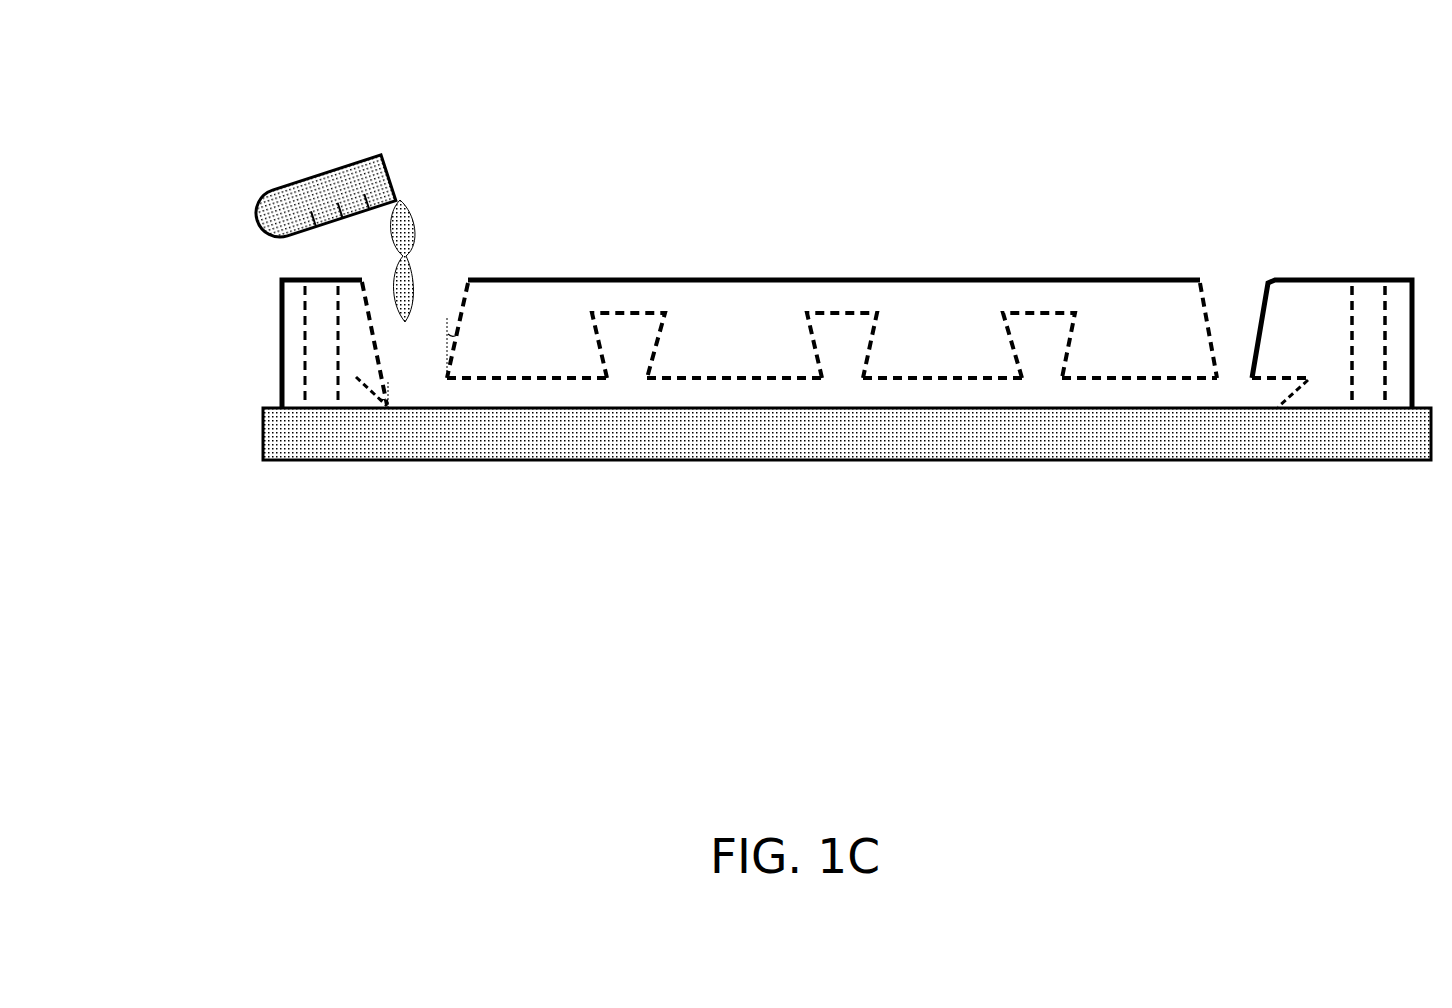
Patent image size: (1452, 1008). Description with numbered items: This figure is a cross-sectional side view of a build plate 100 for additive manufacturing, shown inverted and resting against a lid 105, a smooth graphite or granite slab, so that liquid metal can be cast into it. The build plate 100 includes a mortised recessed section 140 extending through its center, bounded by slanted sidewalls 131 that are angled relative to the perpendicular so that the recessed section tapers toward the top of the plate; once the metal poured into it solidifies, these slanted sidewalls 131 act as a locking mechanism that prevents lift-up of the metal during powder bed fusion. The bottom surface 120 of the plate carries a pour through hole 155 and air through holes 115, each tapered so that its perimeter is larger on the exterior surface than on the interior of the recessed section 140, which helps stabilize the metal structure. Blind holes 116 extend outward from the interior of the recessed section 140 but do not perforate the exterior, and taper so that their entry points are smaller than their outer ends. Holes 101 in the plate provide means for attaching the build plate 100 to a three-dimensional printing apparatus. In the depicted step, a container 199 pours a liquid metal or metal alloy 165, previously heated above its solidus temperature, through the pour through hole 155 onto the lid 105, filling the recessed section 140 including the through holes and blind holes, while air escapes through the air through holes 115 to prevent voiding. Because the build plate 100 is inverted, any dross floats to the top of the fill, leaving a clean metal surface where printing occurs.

The build plate 100 is at (200, 408).
The holes 101 is at (1368, 305).
The lid 105 is at (1076, 436).
The air through holes 115 is at (1231, 253).
The blind holes 116 is at (627, 310).
The bottom surface 120 is at (1035, 276).
The slanted sidewalls 131 is at (357, 394).
The recessed section 140 is at (754, 384).
The pour through hole 155 is at (447, 276).
The liquid metal or metal alloy 165 is at (388, 241).
The container 199 is at (342, 158).